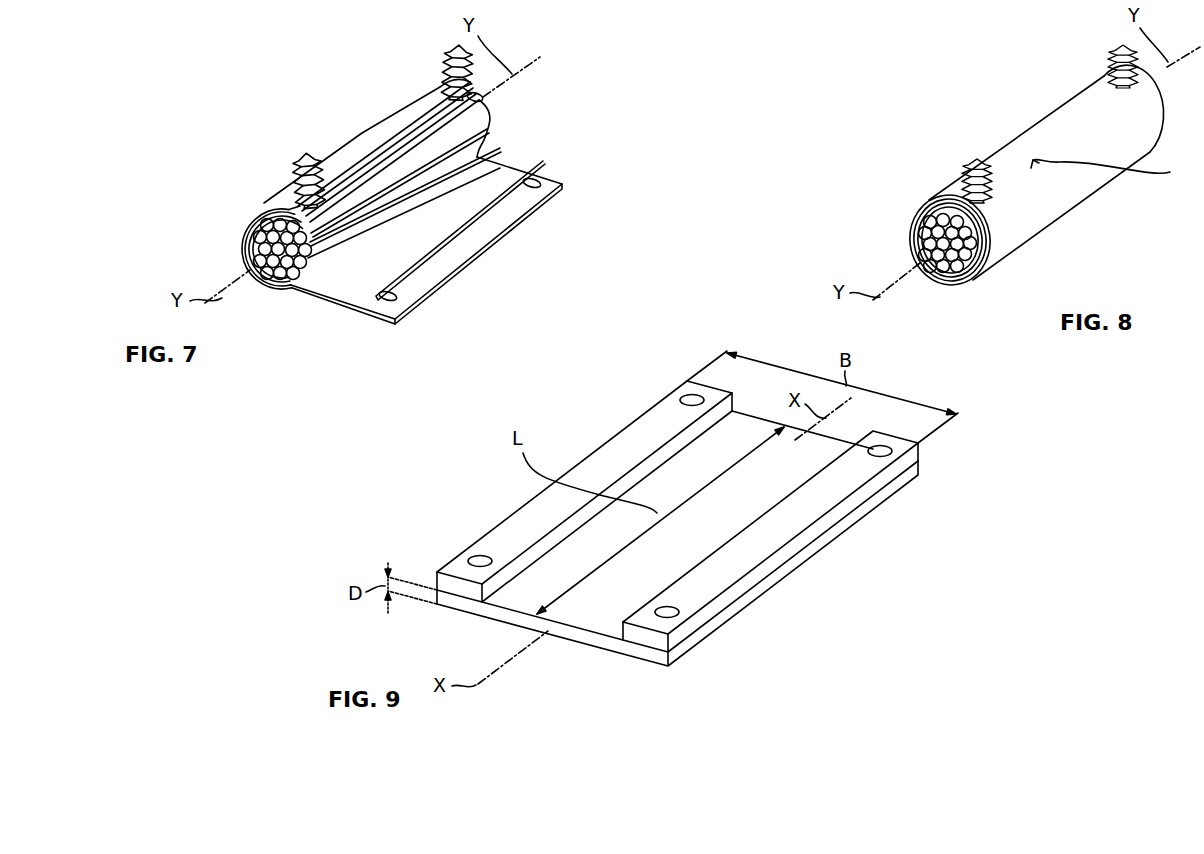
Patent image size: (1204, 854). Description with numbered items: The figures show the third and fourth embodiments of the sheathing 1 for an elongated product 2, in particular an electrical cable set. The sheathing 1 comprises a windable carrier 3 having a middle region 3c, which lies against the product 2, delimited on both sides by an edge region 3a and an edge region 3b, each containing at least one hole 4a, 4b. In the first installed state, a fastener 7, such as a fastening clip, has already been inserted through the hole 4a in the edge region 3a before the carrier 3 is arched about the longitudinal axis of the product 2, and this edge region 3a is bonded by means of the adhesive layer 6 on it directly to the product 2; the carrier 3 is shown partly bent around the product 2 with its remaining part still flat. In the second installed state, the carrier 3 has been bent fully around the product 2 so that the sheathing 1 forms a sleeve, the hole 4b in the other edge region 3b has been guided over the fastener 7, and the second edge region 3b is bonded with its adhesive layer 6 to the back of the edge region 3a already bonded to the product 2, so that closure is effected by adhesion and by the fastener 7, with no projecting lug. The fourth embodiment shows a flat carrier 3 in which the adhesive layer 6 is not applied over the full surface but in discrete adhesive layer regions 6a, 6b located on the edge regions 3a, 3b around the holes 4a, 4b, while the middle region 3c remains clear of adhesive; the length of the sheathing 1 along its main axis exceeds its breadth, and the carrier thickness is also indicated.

In FIG. 7, the sheathing 1 is at (362, 133).
In FIG. 8, the sheathing 1 is at (1034, 121).
In FIG. 9, the sheathing 1 is at (830, 578).
In FIG. 7, the elongated product 2 is at (268, 247).
In FIG. 8, the elongated product 2 is at (928, 231).
In FIG. 7, the carrier 3 is at (295, 290).
In FIG. 8, the carrier 3 is at (955, 286).
In FIG. 9, the carrier 3 is at (805, 450).
In FIG. 7, the edge region 3a is at (427, 103).
In FIG. 8, the edge region 3a is at (915, 212).
In FIG. 9, the edge region 3a is at (460, 598).
In FIG. 8, the edge region 3b is at (1113, 170).
In FIG. 9, the edge region 3b is at (650, 666).
In FIG. 7, the middle region 3c is at (241, 240).
In FIG. 8, the middle region 3c is at (913, 243).
In FIG. 9, the middle region 3c is at (578, 645).
In FIG. 7, the hole 4a is at (483, 99).
In FIG. 9, the hole 4a is at (478, 558).
In FIG. 7, the hole 4b is at (535, 180).
In FIG. 9, the hole 4b is at (675, 612).
In FIG. 7, the adhesive layer 6 is at (367, 313).
In FIG. 9, the adhesive layer region 6a is at (645, 432).
In FIG. 9, the adhesive layer region 6b is at (835, 487).
In FIG. 7, the fastener 7 is at (453, 52).
In FIG. 8, the fastener 7 is at (962, 160).